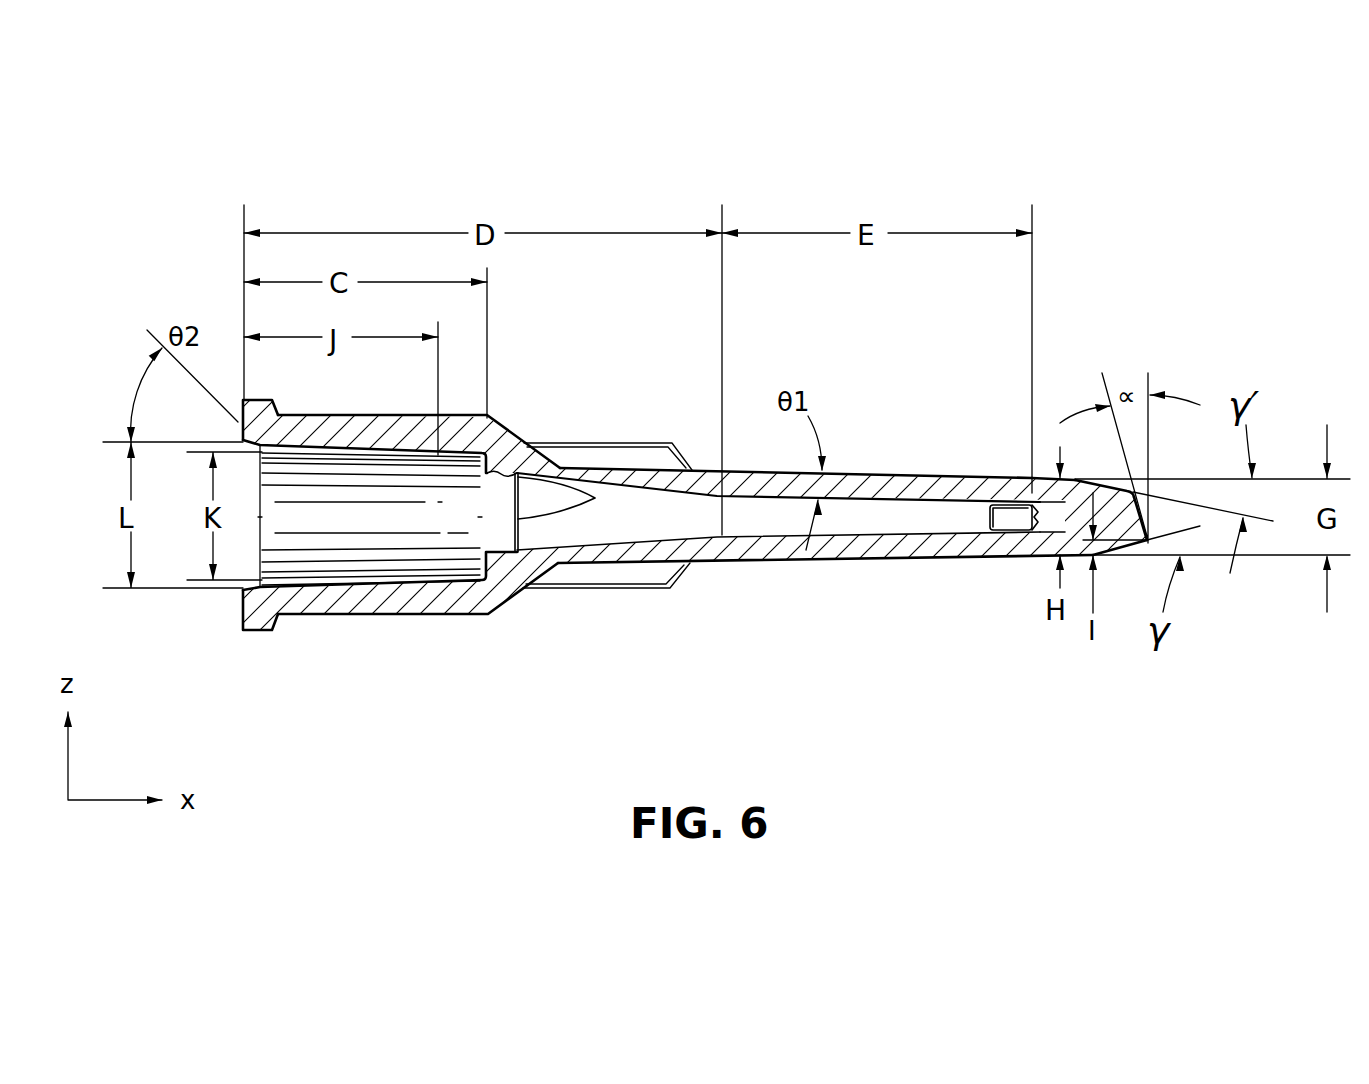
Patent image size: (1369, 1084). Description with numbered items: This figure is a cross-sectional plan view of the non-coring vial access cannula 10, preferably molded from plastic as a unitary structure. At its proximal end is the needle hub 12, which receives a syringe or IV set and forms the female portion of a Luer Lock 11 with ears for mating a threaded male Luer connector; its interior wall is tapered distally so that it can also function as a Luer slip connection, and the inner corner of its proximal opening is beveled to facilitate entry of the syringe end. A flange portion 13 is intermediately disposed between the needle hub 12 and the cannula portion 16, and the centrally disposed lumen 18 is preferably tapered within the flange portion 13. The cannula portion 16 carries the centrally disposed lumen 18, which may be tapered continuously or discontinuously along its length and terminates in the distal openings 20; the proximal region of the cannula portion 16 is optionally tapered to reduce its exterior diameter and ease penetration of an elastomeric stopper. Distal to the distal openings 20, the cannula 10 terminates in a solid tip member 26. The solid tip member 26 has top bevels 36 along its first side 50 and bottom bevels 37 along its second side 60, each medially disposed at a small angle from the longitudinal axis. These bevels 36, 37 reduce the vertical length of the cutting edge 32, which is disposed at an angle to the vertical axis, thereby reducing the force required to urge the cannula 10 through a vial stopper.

The non-coring vial access cannula 10 is at (1112, 272).
The Luer Lock female portion 11 is at (253, 630).
The needle hub 12 is at (363, 603).
The flange portion 13 is at (583, 534).
The cannula portion 16 is at (859, 557).
The centrally disposed lumen 18 is at (733, 519).
The distal openings 20 is at (990, 532).
The solid tip member 26 is at (1040, 557).
The cutting edge 32 is at (1171, 520).
The top bevels 36 is at (1084, 481).
The bottom bevels 37 is at (1113, 552).
The first side 50 is at (1060, 531).
The second side 60 is at (1052, 477).